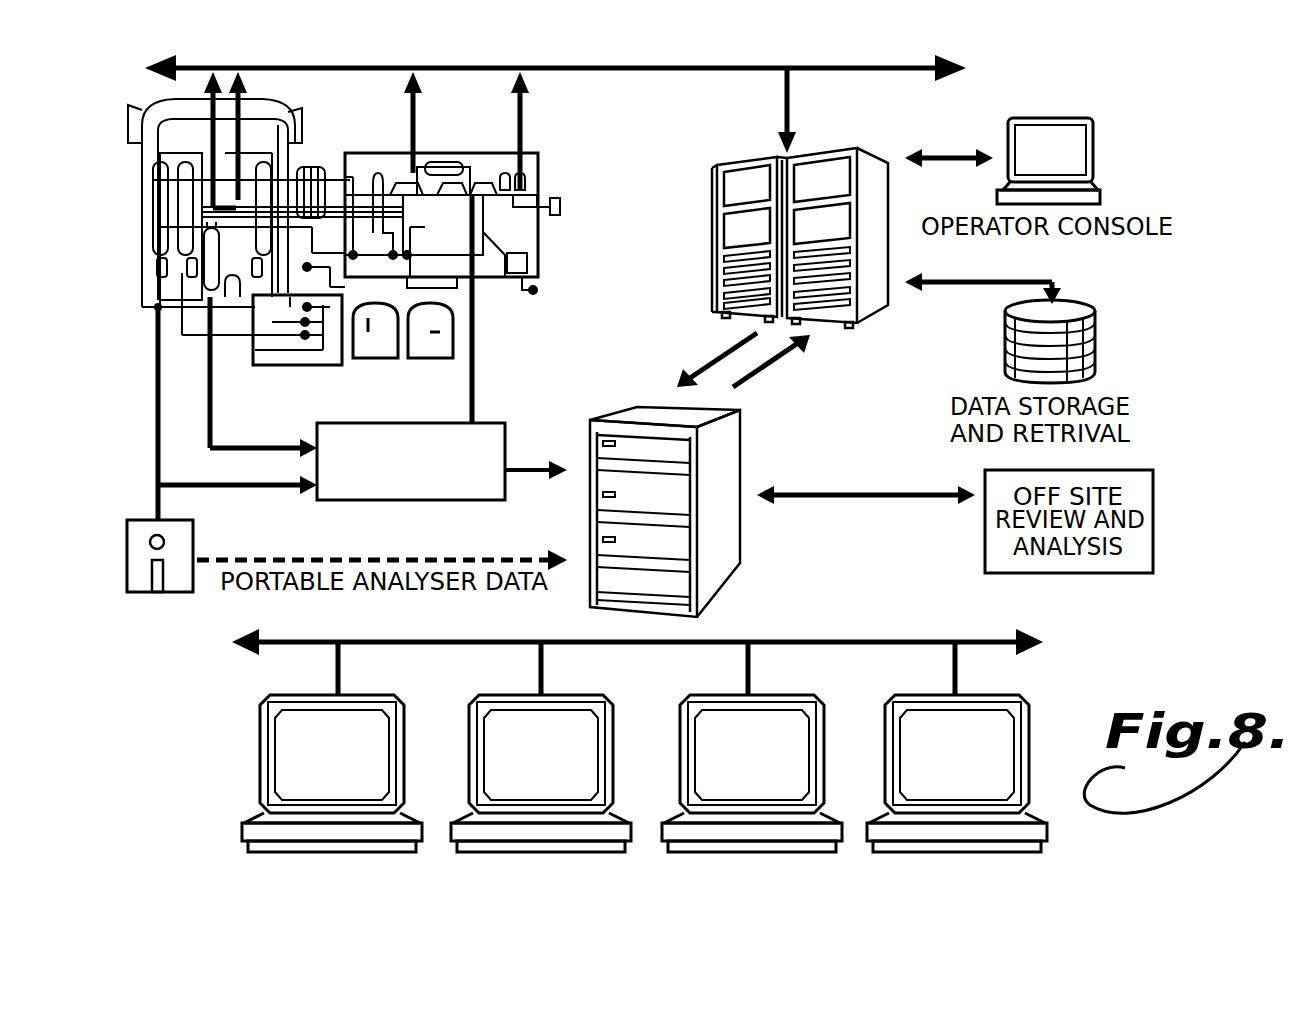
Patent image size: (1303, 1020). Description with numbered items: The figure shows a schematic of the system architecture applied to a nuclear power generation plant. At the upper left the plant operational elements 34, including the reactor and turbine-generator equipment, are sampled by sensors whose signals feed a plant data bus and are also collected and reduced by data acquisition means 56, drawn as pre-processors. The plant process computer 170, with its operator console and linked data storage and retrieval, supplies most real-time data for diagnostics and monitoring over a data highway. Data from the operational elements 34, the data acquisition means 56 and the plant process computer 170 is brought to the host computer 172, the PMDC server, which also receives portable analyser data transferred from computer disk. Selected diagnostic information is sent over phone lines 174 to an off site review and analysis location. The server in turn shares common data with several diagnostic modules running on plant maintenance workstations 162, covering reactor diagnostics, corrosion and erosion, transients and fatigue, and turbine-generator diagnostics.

The plant operational elements 34 is at (353, 157).
The data acquisition means 56 is at (488, 425).
The plant process computer 170 is at (733, 233).
The host computer 172 is at (718, 600).
The phone lines 174 is at (857, 495).
The plant maintenance workstation 162 is at (326, 695).